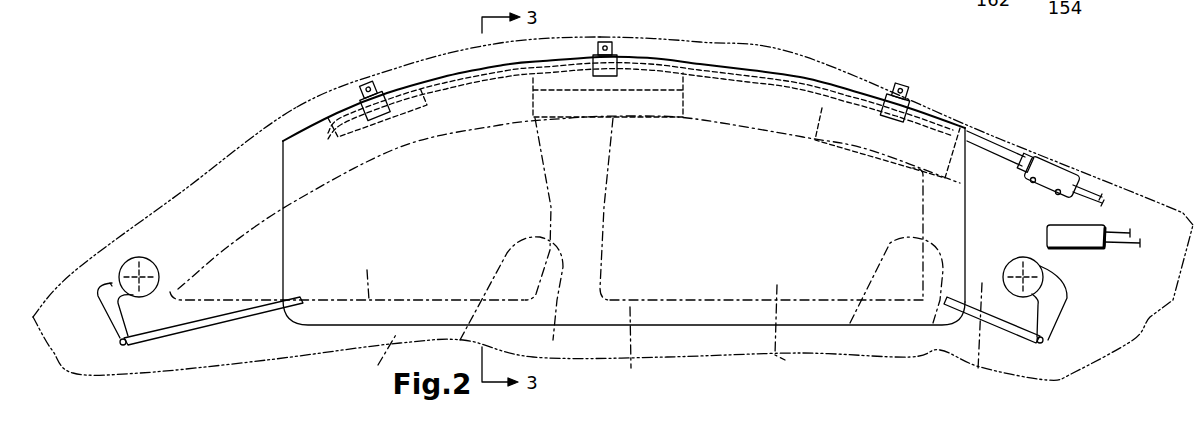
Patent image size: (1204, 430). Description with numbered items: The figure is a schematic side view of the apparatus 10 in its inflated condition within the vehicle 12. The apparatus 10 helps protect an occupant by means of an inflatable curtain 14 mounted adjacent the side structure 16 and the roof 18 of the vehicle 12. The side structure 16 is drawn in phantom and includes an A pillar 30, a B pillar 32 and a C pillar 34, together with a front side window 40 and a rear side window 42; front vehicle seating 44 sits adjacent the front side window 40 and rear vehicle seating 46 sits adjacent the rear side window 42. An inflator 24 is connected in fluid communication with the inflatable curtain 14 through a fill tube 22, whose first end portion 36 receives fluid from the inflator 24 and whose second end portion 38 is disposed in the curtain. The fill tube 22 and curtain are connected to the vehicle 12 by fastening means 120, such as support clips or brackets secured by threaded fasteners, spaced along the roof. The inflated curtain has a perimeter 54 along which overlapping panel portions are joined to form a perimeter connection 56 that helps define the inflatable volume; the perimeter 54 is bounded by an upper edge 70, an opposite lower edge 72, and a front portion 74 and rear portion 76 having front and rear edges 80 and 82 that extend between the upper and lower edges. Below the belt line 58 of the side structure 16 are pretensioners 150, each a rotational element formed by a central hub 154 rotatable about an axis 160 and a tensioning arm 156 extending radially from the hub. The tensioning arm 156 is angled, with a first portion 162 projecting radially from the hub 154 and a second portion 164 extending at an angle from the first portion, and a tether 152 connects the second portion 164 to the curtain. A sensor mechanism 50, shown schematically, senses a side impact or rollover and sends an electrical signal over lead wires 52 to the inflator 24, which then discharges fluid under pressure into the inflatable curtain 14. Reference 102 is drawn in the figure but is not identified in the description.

The apparatus 10 is at (405, 36).
The vehicle 12 is at (258, 41).
The inflatable curtain 14 is at (430, 250).
The side structure 16 is at (577, 290).
The roof 18 is at (397, 67).
The fill tube 22 is at (973, 130).
The inflator 24 is at (1050, 173).
The A pillar 30 is at (197, 202).
The B pillar 32 is at (590, 207).
The C pillar 34 is at (969, 338).
The first end portion 36 is at (1013, 150).
The second end portion 38 is at (467, 52).
The front side window 40 is at (373, 359).
The rear side window 42 is at (793, 331).
The front vehicle seating 44 is at (507, 255).
The rear vehicle seating 46 is at (880, 258).
The sensor mechanism 50 is at (1083, 250).
The lead wires 52 is at (1087, 183).
The perimeter 54 is at (320, 327).
The perimeter connection 56 is at (667, 313).
The belt line 58 is at (630, 348).
The upper edge 70 is at (543, 62).
The lower edge 72 is at (718, 313).
The front portion 74 is at (300, 240).
The rear portion 76 is at (947, 262).
The front edge 80 is at (283, 220).
The rear edge 82 is at (967, 196).
The channel 102 is at (368, 310).
The fastening means 120 is at (373, 107).
The pretensioner 150 is at (133, 262).
The tether 152 is at (178, 327).
The central hub 154 is at (160, 263).
The tensioning arm 156 is at (114, 300).
The axis 160 is at (143, 247).
The first portion 162 is at (110, 280).
The second portion 164 is at (113, 333).